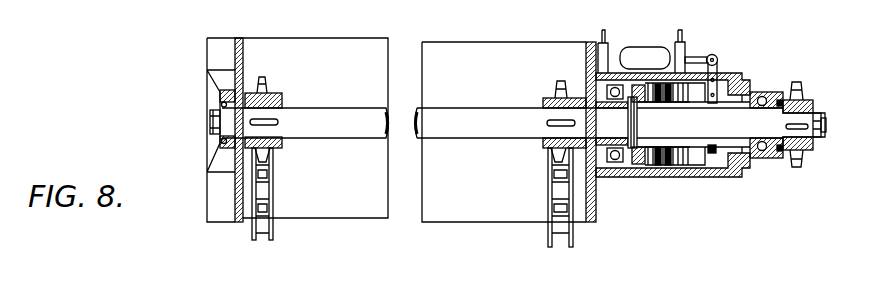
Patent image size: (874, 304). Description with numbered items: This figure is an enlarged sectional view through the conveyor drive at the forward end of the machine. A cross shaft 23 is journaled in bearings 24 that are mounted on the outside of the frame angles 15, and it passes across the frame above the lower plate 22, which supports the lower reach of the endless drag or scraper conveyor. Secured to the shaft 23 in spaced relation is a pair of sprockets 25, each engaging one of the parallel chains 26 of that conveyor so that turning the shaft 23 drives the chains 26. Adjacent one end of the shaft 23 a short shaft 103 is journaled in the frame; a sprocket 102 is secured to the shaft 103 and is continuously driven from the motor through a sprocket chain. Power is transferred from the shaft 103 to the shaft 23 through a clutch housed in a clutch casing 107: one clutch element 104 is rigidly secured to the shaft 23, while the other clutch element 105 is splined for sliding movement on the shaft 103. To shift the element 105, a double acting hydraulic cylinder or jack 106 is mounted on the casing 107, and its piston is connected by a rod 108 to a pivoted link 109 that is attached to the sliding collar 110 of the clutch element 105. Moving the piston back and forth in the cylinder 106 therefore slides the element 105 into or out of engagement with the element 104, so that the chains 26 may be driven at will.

The angle 15 is at (243, 58).
The lower plate 22 is at (368, 181).
The cross shaft 23 is at (470, 134).
The bearing 24 is at (218, 152).
The sprocket 25 is at (279, 93).
The chain 26 is at (272, 193).
The sprocket 102 is at (799, 98).
The short shaft 103 is at (749, 153).
The clutch element 104 is at (603, 103).
The sliding clutch element 105 is at (687, 166).
The double acting hydraulic cylinder 106 is at (657, 55).
The clutch casing 107 is at (708, 178).
The rod 108 is at (700, 57).
The pivoted link 109 is at (719, 75).
The sliding collar 110 is at (716, 153).